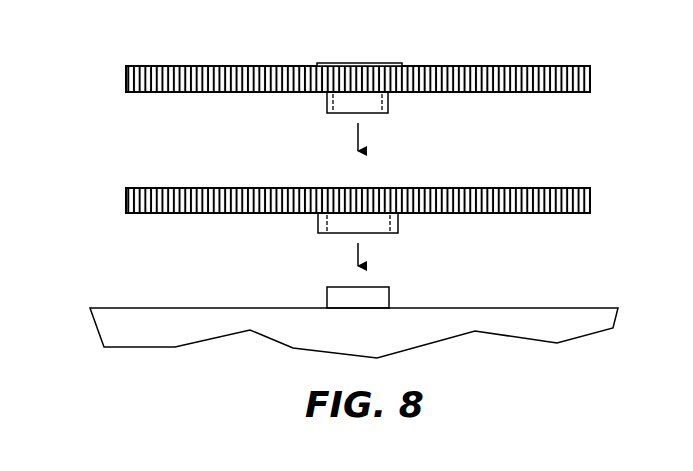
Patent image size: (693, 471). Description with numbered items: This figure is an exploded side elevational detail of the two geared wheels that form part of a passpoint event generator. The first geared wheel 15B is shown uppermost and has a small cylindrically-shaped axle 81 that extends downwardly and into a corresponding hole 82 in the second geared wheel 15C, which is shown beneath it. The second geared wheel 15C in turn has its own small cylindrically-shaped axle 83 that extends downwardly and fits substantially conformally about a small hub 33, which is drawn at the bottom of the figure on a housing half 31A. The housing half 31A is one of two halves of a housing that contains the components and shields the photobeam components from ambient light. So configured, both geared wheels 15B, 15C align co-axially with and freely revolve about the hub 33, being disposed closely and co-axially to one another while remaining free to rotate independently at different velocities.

The first geared wheel 15B is at (567, 66).
The second geared wheel 15C is at (567, 188).
The axle 81 is at (330, 98).
The hole 82 is at (370, 190).
The axle 83 is at (398, 222).
The hub 33 is at (327, 305).
The housing half 31A is at (567, 308).